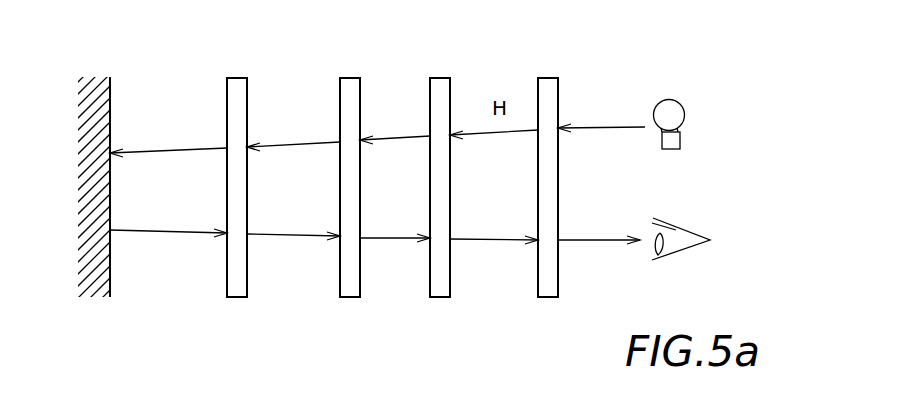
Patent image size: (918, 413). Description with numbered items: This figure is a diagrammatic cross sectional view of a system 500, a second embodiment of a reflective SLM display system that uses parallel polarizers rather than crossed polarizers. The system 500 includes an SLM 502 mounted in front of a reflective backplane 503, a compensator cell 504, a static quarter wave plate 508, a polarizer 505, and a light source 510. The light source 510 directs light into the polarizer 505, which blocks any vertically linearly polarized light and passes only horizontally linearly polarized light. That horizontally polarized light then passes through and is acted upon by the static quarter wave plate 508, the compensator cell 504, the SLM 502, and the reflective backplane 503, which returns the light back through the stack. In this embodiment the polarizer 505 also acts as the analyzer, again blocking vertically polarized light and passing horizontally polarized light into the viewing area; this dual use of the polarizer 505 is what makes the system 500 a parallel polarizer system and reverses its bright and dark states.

The system 500 is at (248, 55).
The SLM 502 is at (238, 297).
The reflective backplane 503 is at (110, 253).
The compensator cell 504 is at (357, 297).
The polarizer 505 is at (552, 297).
The static quarter wave plate 508 is at (447, 297).
The light source 510 is at (681, 116).